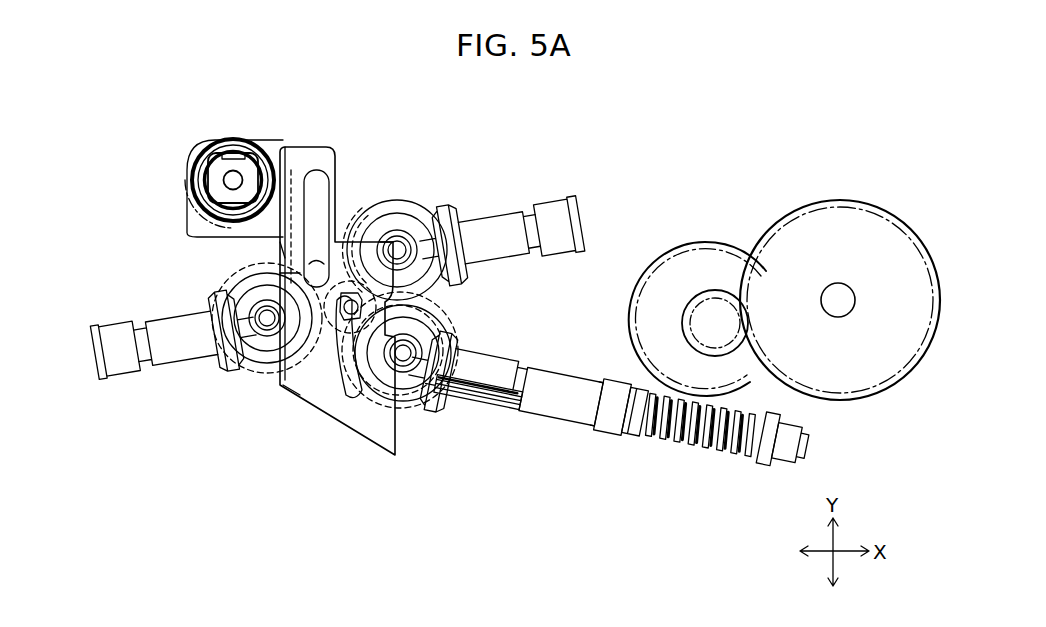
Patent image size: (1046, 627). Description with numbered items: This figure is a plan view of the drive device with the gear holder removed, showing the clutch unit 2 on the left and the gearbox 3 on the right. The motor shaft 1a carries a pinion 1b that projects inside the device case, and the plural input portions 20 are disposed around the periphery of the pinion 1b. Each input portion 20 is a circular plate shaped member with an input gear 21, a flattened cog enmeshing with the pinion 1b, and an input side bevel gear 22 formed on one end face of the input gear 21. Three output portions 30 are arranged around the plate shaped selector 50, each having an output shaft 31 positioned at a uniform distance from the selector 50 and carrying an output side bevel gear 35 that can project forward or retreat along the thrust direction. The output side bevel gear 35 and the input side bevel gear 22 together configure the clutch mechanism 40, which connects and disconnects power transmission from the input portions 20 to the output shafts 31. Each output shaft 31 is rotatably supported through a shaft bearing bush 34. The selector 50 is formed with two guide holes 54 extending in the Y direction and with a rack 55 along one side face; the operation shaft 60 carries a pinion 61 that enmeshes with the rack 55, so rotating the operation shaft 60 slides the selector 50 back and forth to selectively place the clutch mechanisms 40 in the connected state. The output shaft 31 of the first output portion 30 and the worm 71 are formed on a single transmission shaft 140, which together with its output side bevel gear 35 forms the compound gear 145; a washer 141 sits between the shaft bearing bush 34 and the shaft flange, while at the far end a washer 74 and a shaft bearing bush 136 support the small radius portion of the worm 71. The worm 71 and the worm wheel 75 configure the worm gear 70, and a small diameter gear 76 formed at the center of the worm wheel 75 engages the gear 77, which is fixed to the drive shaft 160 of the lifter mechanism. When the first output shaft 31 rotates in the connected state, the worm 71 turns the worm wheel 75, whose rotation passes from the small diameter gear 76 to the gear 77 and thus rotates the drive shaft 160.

The clutch unit 2 is at (390, 163).
The gearbox 3 is at (784, 269).
The motor shaft 1a is at (377, 257).
The pinion 1b is at (312, 400).
The input portions 20 is at (400, 205).
The input gear 21 is at (425, 215).
The input side bevel gear 22 is at (378, 225).
The output portions 30 is at (524, 196).
The output shaft 31 is at (537, 365).
The shaft bearing bush 34 is at (562, 228).
The output side bevel gear 35 is at (487, 226).
The clutch mechanism 40 is at (455, 201).
The selector 50 is at (322, 422).
The guide holes 54 is at (318, 185).
The rack 55 is at (281, 250).
The operation shaft 60 is at (215, 182).
The pinion 61 is at (283, 148).
The worm gear 70 is at (701, 455).
The worm 71 is at (690, 432).
The washer 74 is at (764, 448).
The worm wheel 75 is at (683, 244).
The small diameter gear 76 is at (740, 298).
The gear 77 is at (860, 200).
The shaft bearing bush 136 is at (793, 445).
The transmission shaft 140 is at (571, 367).
The washer 141 is at (630, 428).
The compound gear 145 is at (603, 452).
The drive shaft 160 is at (840, 283).